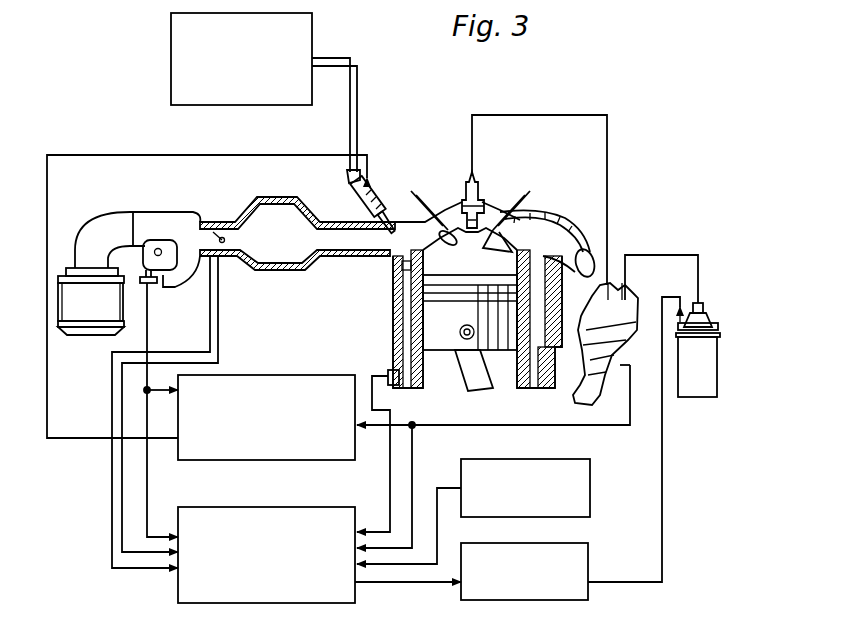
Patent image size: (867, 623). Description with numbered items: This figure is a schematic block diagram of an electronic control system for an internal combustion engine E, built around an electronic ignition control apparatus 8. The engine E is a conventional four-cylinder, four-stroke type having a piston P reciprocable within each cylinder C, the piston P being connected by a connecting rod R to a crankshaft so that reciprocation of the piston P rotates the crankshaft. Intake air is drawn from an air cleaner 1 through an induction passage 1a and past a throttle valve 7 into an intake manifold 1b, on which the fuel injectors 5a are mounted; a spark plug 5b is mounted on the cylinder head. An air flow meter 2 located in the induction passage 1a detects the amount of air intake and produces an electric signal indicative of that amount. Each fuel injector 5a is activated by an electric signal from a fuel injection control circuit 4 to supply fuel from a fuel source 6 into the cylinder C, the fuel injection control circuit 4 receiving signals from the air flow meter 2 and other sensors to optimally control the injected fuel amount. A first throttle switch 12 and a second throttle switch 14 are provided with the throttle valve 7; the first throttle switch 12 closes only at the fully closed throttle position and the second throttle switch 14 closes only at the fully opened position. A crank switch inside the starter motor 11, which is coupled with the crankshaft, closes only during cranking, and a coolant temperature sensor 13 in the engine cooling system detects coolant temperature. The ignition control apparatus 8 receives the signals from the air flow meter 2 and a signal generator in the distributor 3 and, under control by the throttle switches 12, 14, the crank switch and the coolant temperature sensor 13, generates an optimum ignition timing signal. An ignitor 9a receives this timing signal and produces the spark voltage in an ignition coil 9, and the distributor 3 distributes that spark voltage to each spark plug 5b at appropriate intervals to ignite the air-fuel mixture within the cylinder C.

The air cleaner 1 is at (91, 337).
The induction passage 1a is at (209, 222).
The intake manifold 1b is at (371, 259).
The air flow meter 2 is at (178, 283).
The distributor 3 is at (636, 298).
The fuel injection control circuit 4 is at (272, 375).
The fuel injector 5a is at (385, 200).
The spark plug 5b is at (480, 196).
The fuel source 6 is at (171, 52).
The throttle valve 7 is at (226, 236).
The ignition control apparatus 8 is at (250, 507).
The ignition coil 9 is at (707, 380).
The ignitor 9a is at (590, 556).
The starter motor 11 is at (591, 500).
The first throttle switch 12 is at (222, 258).
The coolant temperature sensor 13 is at (388, 372).
The second throttle switch 14 is at (210, 262).
The cylinder C is at (396, 284).
The internal combustion engine E is at (552, 213).
The piston P is at (455, 331).
The connecting rod R is at (461, 385).